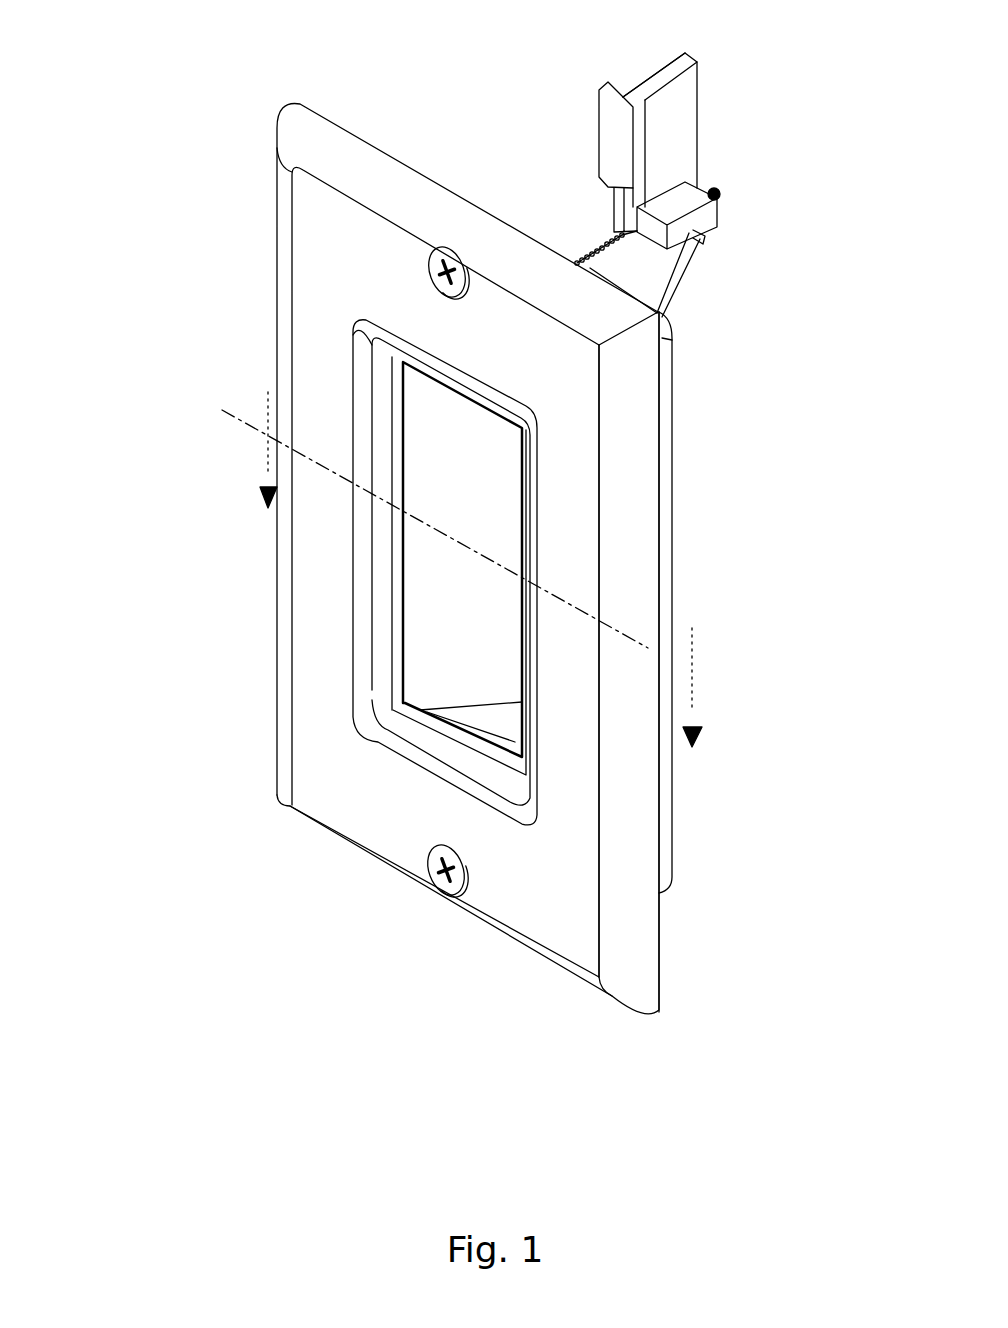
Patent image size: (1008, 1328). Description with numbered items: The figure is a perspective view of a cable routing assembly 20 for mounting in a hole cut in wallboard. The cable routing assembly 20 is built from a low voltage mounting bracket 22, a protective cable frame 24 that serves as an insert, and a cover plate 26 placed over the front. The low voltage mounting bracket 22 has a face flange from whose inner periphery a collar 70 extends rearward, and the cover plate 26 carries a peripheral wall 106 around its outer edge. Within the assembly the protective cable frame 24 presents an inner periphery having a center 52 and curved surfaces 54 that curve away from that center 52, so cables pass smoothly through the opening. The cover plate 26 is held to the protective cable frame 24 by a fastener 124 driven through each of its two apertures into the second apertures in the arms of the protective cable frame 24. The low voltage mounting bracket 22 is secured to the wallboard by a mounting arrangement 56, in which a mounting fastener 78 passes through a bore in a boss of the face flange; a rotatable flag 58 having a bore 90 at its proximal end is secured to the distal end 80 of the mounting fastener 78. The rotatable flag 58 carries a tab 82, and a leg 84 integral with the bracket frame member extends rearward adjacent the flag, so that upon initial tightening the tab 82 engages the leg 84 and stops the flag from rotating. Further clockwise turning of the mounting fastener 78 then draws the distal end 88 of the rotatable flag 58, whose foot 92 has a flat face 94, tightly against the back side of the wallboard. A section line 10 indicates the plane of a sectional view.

The cable routing assembly 20 is at (140, 122).
The low voltage mounting bracket 22 is at (675, 380).
The cover plate 26 is at (327, 113).
The collar 70 is at (668, 492).
The peripheral wall 106 is at (620, 823).
The protective cable frame 24 is at (373, 527).
The center 52 is at (381, 437).
The curved surfaces 54 is at (417, 753).
The fastener 124 is at (433, 277).
The section line 10 is at (477, 569).
The mounting arrangement 56 is at (570, 128).
The rotatable flag 58 is at (695, 130).
The distal end 88 is at (660, 75).
The flat face 94 is at (630, 151).
The foot 92 is at (638, 143).
The bore 90 is at (613, 232).
The distal end 80 is at (717, 203).
The mounting fastener 78 is at (593, 248).
The leg 84 is at (655, 283).
The tab 82 is at (707, 240).